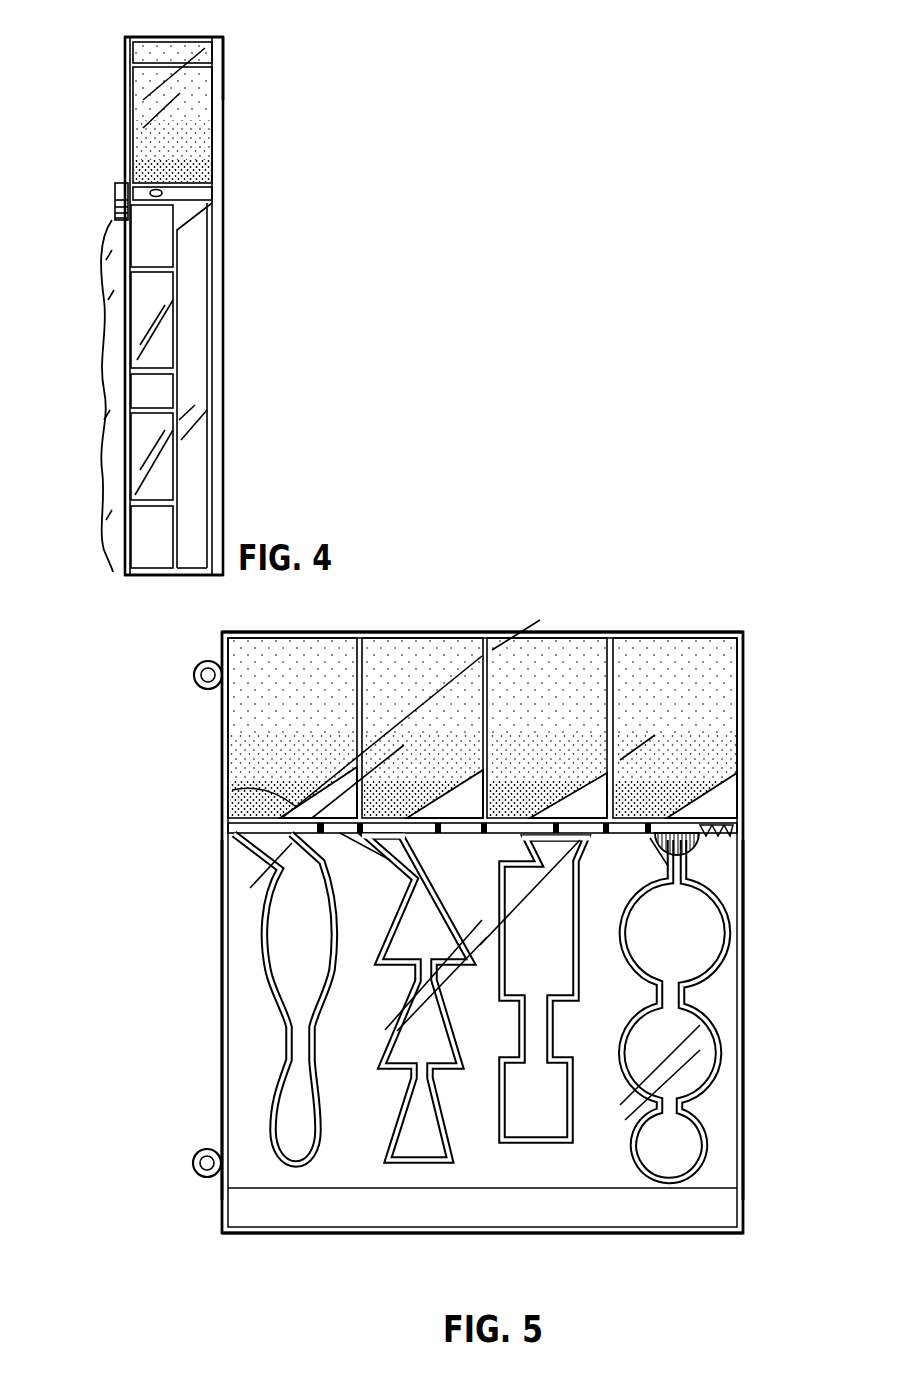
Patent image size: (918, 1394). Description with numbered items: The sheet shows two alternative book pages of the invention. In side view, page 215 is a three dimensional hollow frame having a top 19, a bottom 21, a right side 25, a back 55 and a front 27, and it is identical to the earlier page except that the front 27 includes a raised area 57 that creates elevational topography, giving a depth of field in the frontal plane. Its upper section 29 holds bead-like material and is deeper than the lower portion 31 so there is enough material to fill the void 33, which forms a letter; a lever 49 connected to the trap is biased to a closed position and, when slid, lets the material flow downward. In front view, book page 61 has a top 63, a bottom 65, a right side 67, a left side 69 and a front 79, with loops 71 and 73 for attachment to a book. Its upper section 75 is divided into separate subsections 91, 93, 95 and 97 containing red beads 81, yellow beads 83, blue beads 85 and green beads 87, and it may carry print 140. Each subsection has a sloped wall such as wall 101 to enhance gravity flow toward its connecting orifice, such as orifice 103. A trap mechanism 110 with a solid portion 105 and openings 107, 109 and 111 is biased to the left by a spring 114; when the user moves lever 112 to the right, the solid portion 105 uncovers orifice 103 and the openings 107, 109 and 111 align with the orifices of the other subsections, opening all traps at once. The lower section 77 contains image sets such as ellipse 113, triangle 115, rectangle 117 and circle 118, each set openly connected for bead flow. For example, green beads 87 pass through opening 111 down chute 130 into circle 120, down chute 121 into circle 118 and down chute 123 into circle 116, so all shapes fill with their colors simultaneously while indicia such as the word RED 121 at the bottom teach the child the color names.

In FIG. 4, the top 19 is at (132, 40).
In FIG. 4, the alternative present invention device page 215 is at (236, 38).
In FIG. 4, the upper section 29 is at (158, 120).
In FIG. 4, the lever 49 is at (115, 198).
In FIG. 4, the back 55 is at (224, 212).
In FIG. 4, the front 27 is at (118, 313).
In FIG. 4, the void 33 is at (140, 348).
In FIG. 4, the right side 25 is at (206, 396).
In FIG. 4, the raised area 57 is at (104, 468).
In FIG. 4, the lower portion 31 is at (145, 540).
In FIG. 4, the bottom 21 is at (152, 575).
In FIG. 5, the book page 61 is at (566, 590).
In FIG. 5, the top 63 is at (440, 632).
In FIG. 5, the red beads 81 is at (355, 640).
In FIG. 5, the yellow beads 83 is at (483, 645).
In FIG. 5, the blue beads 85 is at (583, 648).
In FIG. 5, the green beads 87 is at (705, 648).
In FIG. 5, the subsection 91 is at (310, 679).
In FIG. 5, the subsection 93 is at (438, 679).
In FIG. 5, the subsection 95 is at (561, 679).
In FIG. 5, the subsection 97 is at (688, 679).
In FIG. 5, the print 140 is at (335, 690).
In FIG. 5, the loop 71 is at (200, 685).
In FIG. 5, the loop 73 is at (200, 1178).
In FIG. 5, the upper section 75 is at (790, 630).
In FIG. 5, the lower section 77 is at (790, 1232).
In FIG. 5, the sloped wall 101 is at (290, 808).
In FIG. 5, the connecting orifice 103 is at (228, 840).
In FIG. 5, the solid portion 105 is at (383, 847).
In FIG. 5, the opening 107 is at (340, 833).
In FIG. 5, the opening 109 is at (447, 833).
In FIG. 5, the trap mechanism 110 is at (492, 858).
In FIG. 5, the opening 111 is at (590, 835).
In FIG. 5, the lever 112 is at (668, 868).
In FIG. 5, the spring 114 is at (718, 836).
In FIG. 5, the ellipse 113 is at (290, 963).
In FIG. 5, the triangle 115 is at (412, 957).
In FIG. 5, the rectangle 117 is at (452, 1000).
In FIG. 5, the front 79 is at (365, 1072).
In FIG. 5, the circle 118 is at (640, 1068).
In FIG. 5, the circle 120 is at (658, 958).
In FIG. 5, the chute 121 is at (660, 1000).
In FIG. 5, the chute 123 is at (648, 1105).
In FIG. 5, the circle 116 is at (660, 1158).
In FIG. 5, the chute 130 is at (640, 878).
In FIG. 5, the right side 67 is at (744, 962).
In FIG. 5, the left side 69 is at (225, 1030).
In FIG. 5, the bottom 65 is at (545, 1234).